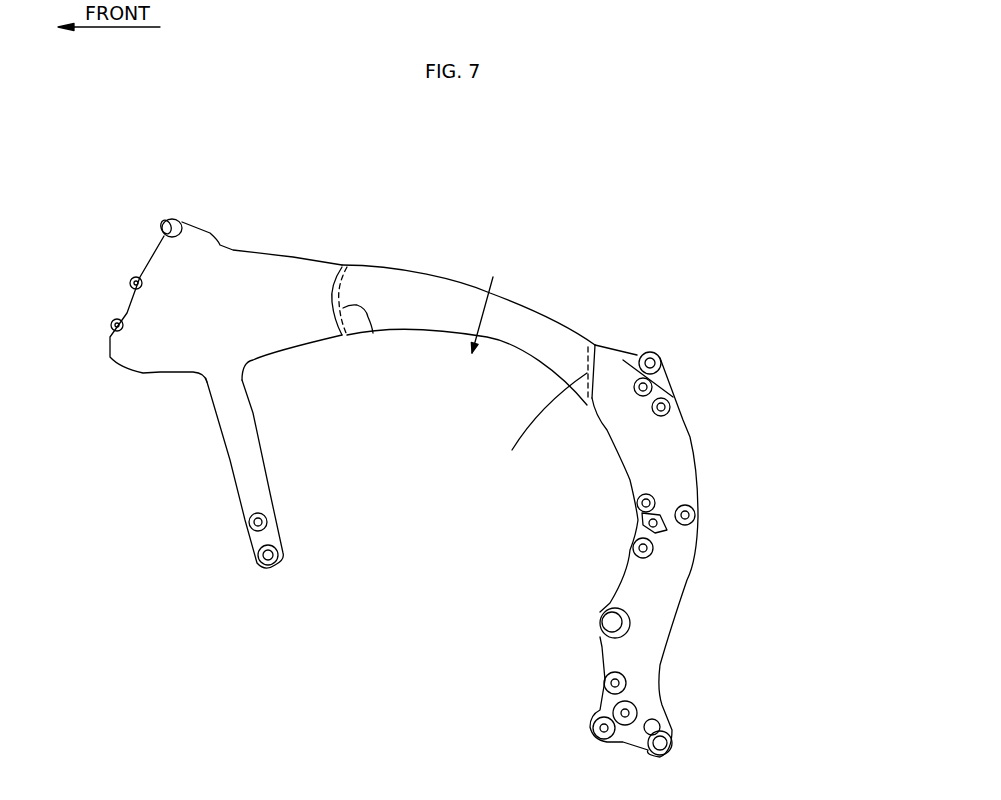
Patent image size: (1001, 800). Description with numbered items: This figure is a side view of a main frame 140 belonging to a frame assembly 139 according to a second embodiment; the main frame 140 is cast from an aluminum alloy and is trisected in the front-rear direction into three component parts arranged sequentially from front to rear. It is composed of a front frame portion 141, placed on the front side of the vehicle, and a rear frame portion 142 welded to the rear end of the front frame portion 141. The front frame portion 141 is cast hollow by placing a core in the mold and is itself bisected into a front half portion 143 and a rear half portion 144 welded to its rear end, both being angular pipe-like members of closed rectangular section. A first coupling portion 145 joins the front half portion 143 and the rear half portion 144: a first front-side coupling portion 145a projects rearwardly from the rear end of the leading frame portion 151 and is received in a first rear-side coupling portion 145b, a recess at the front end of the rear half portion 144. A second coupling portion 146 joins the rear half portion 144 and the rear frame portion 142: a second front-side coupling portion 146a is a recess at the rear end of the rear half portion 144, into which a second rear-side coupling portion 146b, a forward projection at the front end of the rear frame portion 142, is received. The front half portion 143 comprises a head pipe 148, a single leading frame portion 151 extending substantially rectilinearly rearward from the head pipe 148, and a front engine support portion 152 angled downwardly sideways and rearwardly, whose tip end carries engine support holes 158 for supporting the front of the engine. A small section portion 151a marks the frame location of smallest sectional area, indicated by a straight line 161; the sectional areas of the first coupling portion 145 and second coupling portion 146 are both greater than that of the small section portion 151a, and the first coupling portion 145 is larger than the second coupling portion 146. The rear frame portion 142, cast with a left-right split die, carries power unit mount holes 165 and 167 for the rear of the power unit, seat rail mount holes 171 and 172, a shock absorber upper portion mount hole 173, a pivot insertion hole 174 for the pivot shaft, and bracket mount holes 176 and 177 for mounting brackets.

The frame assembly 139 is at (635, 193).
The main frame 140 is at (548, 200).
The front frame portion 141 is at (288, 257).
The rear frame portion 142 is at (702, 460).
The front half portion 143 is at (152, 250).
The rear half portion 144 is at (403, 268).
The first coupling portion 145 is at (343, 260).
The first front-side coupling portion 145a is at (373, 333).
The first rear-side coupling portion 145b is at (355, 340).
The second coupling portion 146 is at (597, 345).
The second front-side coupling portion 146a is at (583, 403).
The second rear-side coupling portion 146b is at (512, 450).
The head pipe 148 is at (138, 308).
The leading frame portion 151 is at (252, 250).
The small section portion 151a is at (493, 294).
The front engine support portion 152 is at (232, 458).
The engine support hole 158 is at (248, 525).
The straight line 161 is at (476, 353).
The power unit mount hole 165 is at (636, 503).
The power unit mount hole 167 is at (603, 683).
The seat rail mount hole 171 is at (648, 384).
The seat rail mount hole 172 is at (697, 513).
The shock absorber upper portion mount hole 173 is at (670, 405).
The pivot insertion hole 174 is at (600, 623).
The bracket mount hole 176 is at (667, 530).
The bracket mount hole 177 is at (637, 708).